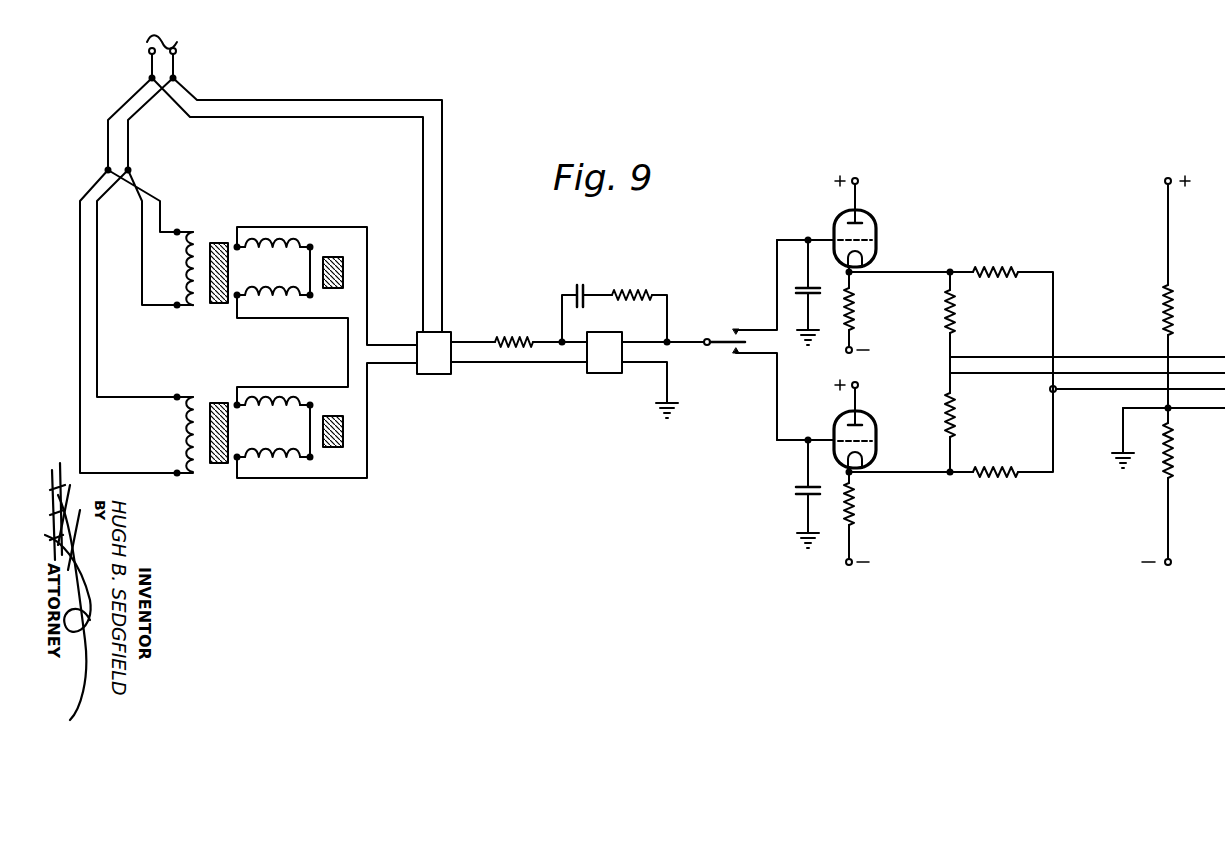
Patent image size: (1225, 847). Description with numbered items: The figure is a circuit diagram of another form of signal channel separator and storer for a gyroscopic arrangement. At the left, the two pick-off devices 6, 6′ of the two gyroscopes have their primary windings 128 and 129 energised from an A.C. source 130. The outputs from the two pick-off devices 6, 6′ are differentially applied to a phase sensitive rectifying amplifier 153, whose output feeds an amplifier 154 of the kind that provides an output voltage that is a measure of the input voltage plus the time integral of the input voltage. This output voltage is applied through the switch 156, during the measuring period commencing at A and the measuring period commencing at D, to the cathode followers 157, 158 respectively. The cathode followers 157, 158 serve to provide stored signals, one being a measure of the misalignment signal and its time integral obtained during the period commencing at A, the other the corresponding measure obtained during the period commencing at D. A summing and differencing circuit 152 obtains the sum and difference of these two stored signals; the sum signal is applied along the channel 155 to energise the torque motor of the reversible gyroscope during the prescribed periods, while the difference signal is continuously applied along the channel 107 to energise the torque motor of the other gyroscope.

The A.C. source 130 is at (177, 53).
The primary winding 128 is at (184, 271).
The primary winding 129 is at (184, 434).
The pick-off device 6 is at (276, 258).
The pick-off device 6' is at (275, 418).
The phase sensitive rectifying amplifier 153 is at (441, 363).
The amplifier 154 is at (648, 279).
The switch 156 is at (765, 343).
The cathode follower 157 is at (863, 232).
The cathode follower 158 is at (863, 432).
The summing and differencing circuit 152 is at (1012, 258).
The channel 107 is at (1124, 345).
The channel 155 is at (1130, 395).